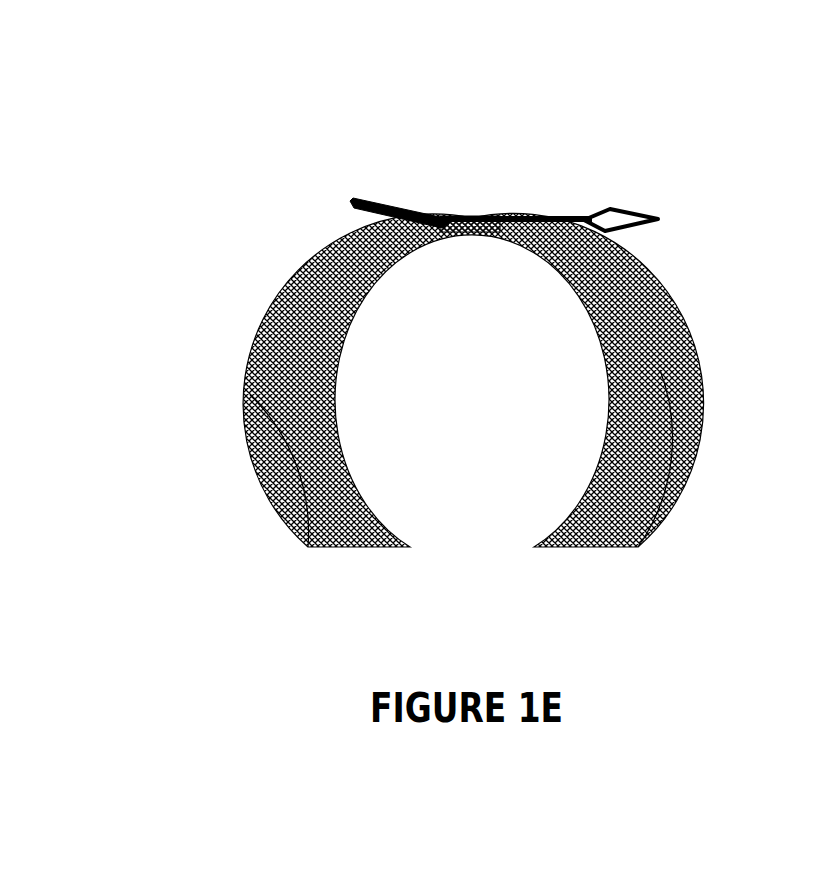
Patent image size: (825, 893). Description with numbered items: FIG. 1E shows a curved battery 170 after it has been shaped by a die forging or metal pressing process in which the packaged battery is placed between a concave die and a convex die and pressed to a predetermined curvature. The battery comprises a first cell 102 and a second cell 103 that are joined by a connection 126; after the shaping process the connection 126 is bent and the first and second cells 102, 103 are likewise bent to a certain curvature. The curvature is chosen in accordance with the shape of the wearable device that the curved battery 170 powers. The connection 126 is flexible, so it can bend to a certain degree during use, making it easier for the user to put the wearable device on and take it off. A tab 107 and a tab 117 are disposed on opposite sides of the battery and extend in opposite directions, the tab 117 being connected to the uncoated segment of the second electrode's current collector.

The curved battery 170 is at (480, 57).
The first cell 102 is at (247, 394).
The second cell 103 is at (662, 380).
The tab 107 is at (388, 205).
The tab 117 is at (602, 214).
The connection 126 is at (465, 229).